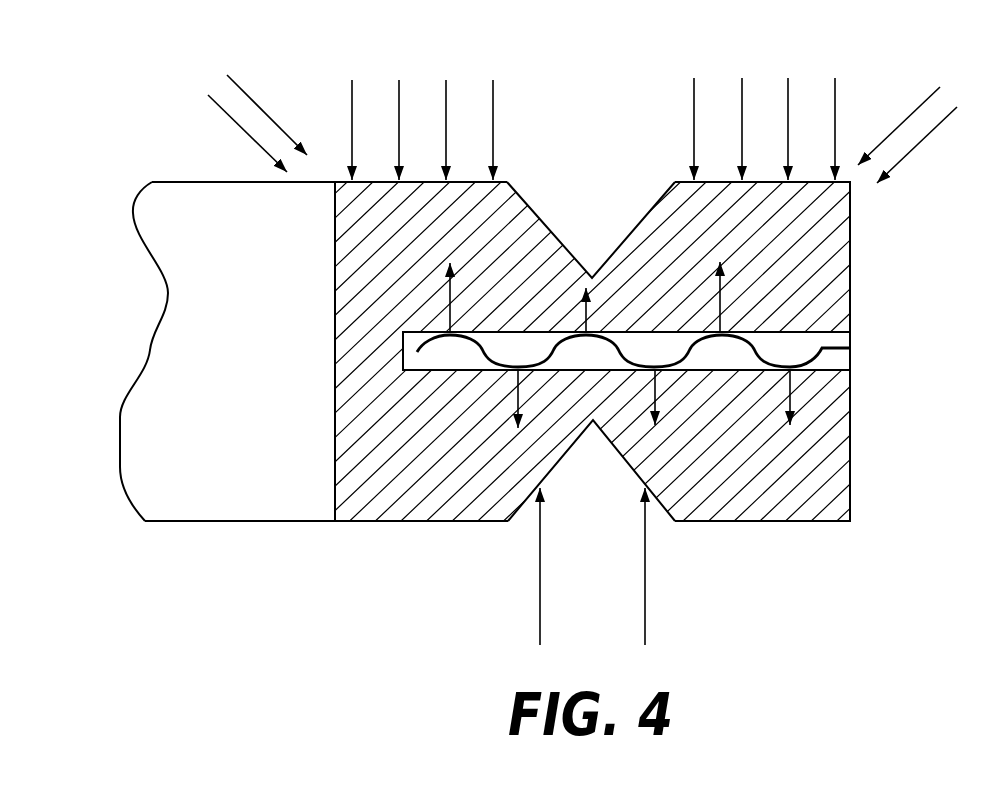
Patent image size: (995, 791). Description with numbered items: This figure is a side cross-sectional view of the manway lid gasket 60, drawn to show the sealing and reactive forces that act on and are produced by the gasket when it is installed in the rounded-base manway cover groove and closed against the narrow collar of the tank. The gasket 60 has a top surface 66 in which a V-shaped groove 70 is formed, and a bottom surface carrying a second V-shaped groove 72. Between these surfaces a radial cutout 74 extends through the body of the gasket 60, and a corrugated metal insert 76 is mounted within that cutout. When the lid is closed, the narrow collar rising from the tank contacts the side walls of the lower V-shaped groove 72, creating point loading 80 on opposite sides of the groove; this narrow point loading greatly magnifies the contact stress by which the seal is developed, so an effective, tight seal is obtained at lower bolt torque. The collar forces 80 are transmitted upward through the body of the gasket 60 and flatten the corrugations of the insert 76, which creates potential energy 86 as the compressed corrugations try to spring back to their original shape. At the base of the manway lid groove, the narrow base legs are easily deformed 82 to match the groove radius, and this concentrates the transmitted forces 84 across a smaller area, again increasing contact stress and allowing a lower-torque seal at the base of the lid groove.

The gasket 60 is at (812, 485).
The top surface 66 is at (420, 182).
The V-shaped groove 70 is at (630, 236).
The V-shaped groove 72 is at (623, 458).
The radial cutout 74 is at (793, 348).
The corrugated metal insert 76 is at (762, 332).
The point loading 80 is at (540, 548).
The deformation of base legs 82 is at (446, 100).
The transmitted forces 84 is at (240, 128).
The potential energy 86 is at (450, 298).